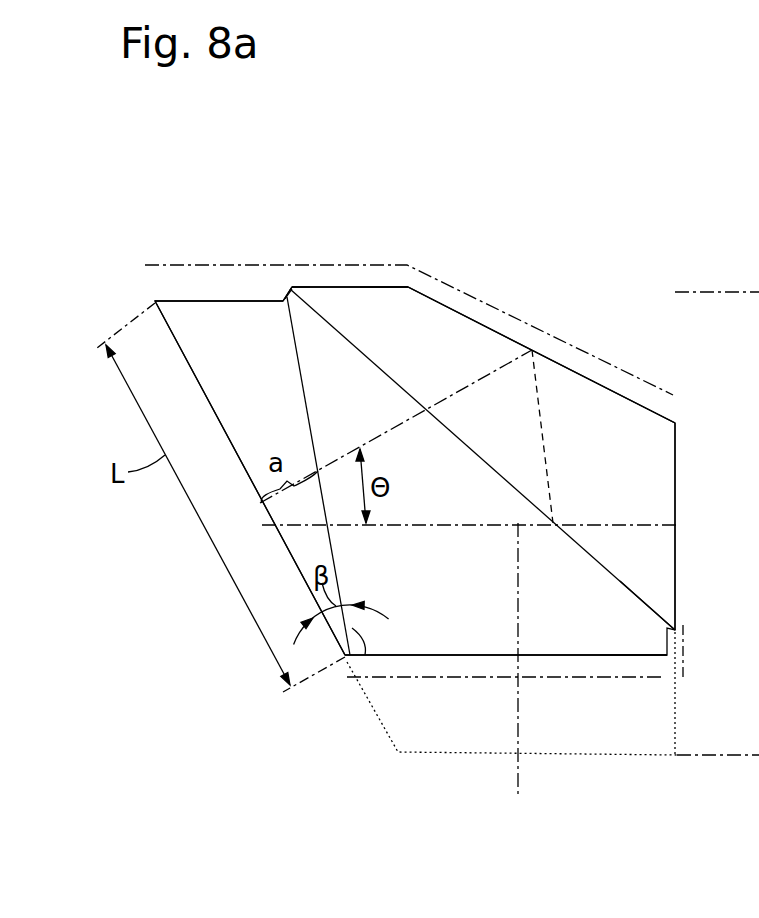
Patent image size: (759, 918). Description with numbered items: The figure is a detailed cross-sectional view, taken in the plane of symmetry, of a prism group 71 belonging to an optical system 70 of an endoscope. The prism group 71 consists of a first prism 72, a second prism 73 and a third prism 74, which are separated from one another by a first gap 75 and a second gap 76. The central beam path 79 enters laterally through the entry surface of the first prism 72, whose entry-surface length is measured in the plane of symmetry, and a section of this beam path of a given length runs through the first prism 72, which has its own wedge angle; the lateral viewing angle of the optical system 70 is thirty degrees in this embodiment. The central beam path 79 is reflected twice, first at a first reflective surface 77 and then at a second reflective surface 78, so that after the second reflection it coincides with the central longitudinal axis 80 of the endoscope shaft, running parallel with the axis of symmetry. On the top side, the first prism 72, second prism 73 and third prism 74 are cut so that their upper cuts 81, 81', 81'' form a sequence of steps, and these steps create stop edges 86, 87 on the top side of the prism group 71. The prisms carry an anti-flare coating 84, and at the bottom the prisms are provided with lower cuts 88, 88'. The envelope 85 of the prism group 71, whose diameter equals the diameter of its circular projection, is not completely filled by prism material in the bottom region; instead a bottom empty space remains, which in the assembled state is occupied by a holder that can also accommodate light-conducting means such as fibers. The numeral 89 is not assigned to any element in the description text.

The optical system 70 is at (556, 190).
The prism group 71 is at (497, 323).
The first prism 72 is at (213, 300).
The second prism 73 is at (290, 296).
The third prism 74 is at (338, 287).
The first gap 75 is at (366, 658).
The second gap 76 is at (605, 568).
The first reflective surface 77 is at (647, 408).
The second reflective surface 78 is at (641, 599).
The central beam path 79 is at (542, 413).
The central longitudinal axis 80 is at (516, 680).
The upper cut 81 is at (212, 460).
The upper cut 81' is at (275, 233).
The upper cut 81'' is at (398, 239).
The anti-flare coating 84 is at (444, 280).
The envelope 85 is at (650, 757).
The stop edge 86 is at (282, 297).
The stop edge 87 is at (297, 287).
The lower cut 88 is at (336, 685).
The lower cut 88' is at (670, 695).
The lower region 89 is at (592, 730).